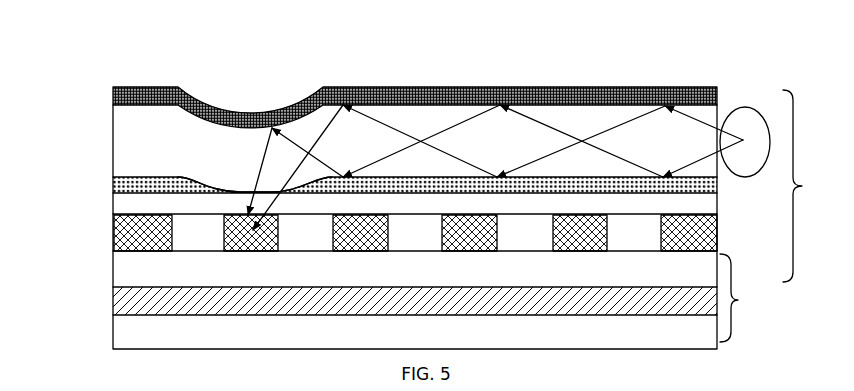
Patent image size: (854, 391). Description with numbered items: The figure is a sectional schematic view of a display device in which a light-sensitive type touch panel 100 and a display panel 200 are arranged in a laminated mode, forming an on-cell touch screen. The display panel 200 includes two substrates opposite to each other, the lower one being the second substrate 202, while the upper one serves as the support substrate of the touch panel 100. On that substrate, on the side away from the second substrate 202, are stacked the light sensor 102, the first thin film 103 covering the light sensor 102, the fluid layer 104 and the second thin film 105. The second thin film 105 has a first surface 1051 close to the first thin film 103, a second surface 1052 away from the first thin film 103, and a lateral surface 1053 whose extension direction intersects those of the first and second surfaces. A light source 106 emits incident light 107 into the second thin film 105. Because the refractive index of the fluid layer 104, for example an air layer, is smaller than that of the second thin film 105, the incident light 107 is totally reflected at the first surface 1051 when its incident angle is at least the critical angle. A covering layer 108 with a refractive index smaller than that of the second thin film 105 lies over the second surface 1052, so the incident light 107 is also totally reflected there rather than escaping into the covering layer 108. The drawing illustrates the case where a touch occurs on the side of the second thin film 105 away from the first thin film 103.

The light-sensitive type touch panel 100 is at (809, 186).
The light sensor 102 is at (125, 230).
The first thin film 103 is at (125, 212).
The fluid layer 104 is at (555, 182).
The second thin film 105 is at (457, 108).
The first surface 1051 is at (165, 178).
The second surface 1052 is at (375, 100).
The lateral surface 1053 is at (717, 170).
The light source 106 is at (752, 120).
The incident light 107 is at (668, 177).
The covering layer 108 is at (147, 99).
The display panel 200 is at (442, 298).
The second substrate 202 is at (155, 332).